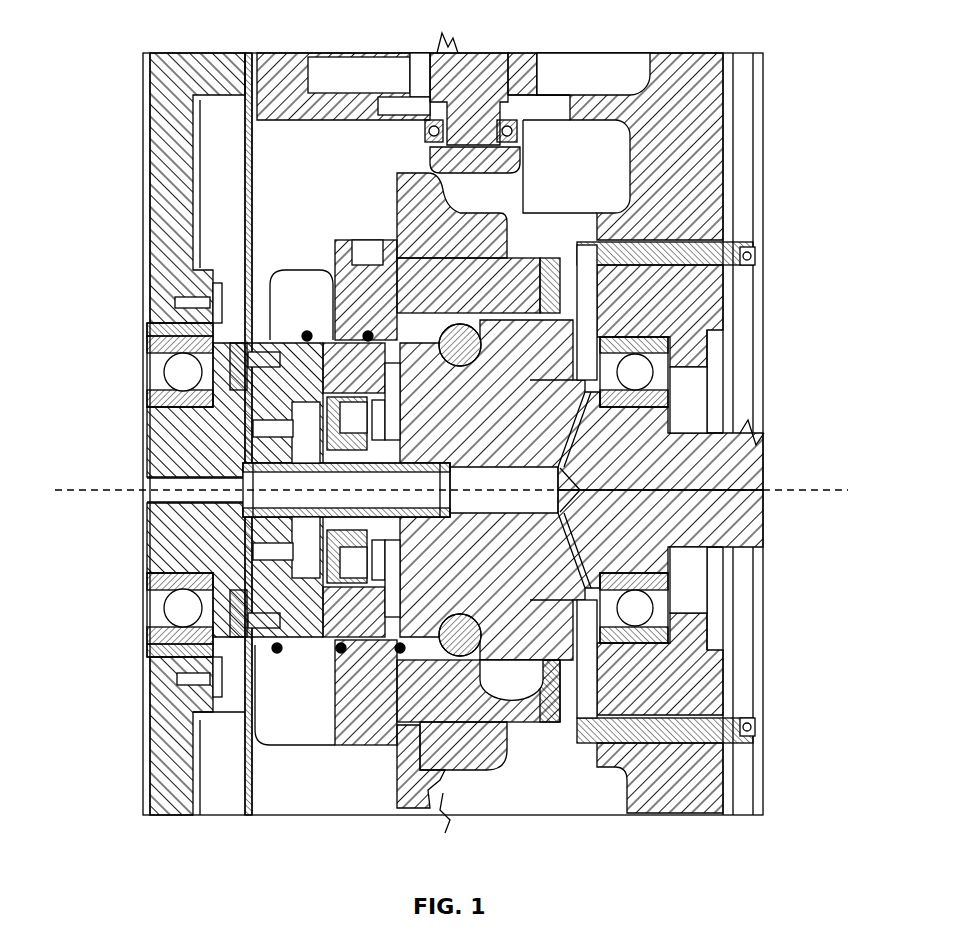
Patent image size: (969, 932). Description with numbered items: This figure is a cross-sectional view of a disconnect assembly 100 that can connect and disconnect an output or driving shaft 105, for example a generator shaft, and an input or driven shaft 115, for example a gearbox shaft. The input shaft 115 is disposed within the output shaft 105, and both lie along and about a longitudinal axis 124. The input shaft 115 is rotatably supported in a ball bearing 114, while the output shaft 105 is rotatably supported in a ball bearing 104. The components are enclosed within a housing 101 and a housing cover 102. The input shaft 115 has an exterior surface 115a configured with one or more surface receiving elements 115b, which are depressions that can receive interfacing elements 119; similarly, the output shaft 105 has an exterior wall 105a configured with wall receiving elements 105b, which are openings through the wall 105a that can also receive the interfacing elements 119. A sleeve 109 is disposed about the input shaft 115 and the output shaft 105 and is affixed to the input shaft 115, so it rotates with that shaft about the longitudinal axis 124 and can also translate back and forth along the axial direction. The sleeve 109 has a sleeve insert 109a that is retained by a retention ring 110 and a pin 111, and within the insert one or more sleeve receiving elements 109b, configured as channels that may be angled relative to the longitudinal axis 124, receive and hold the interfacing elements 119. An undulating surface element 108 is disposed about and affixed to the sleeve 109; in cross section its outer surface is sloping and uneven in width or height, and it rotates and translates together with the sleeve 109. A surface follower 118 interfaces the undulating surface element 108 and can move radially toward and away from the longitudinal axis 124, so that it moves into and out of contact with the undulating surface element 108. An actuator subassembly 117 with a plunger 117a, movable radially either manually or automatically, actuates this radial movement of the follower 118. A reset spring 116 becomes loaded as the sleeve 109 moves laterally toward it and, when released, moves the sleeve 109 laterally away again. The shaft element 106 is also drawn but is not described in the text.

The disconnect assembly 100 is at (548, 794).
The housing 101 is at (693, 135).
The housing cover 102 is at (192, 78).
The ball bearing 104 is at (147, 345).
The output shaft 105 is at (147, 535).
The exterior wall 105a is at (365, 703).
The wall receiving element 105b is at (482, 705).
The hollow shaft 106 is at (385, 437).
The undulating surface element 108 is at (443, 212).
The sleeve 109 is at (340, 275).
The sleeve insert 109a is at (497, 288).
The sleeve receiving element 109b is at (520, 685).
The retention ring 110 is at (547, 258).
The pin 111 is at (555, 305).
The ball bearing 114 is at (668, 400).
The input shaft 115 is at (752, 508).
The exterior surface 115a is at (533, 612).
The surface receiving element 115b is at (455, 612).
The reset spring 116 is at (278, 655).
The actuator subassembly 117 is at (423, 42).
The plunger 117a is at (480, 58).
The surface follower 118 is at (430, 143).
The interfacing element 119 is at (433, 812).
The longitudinal axis 124 is at (85, 490).